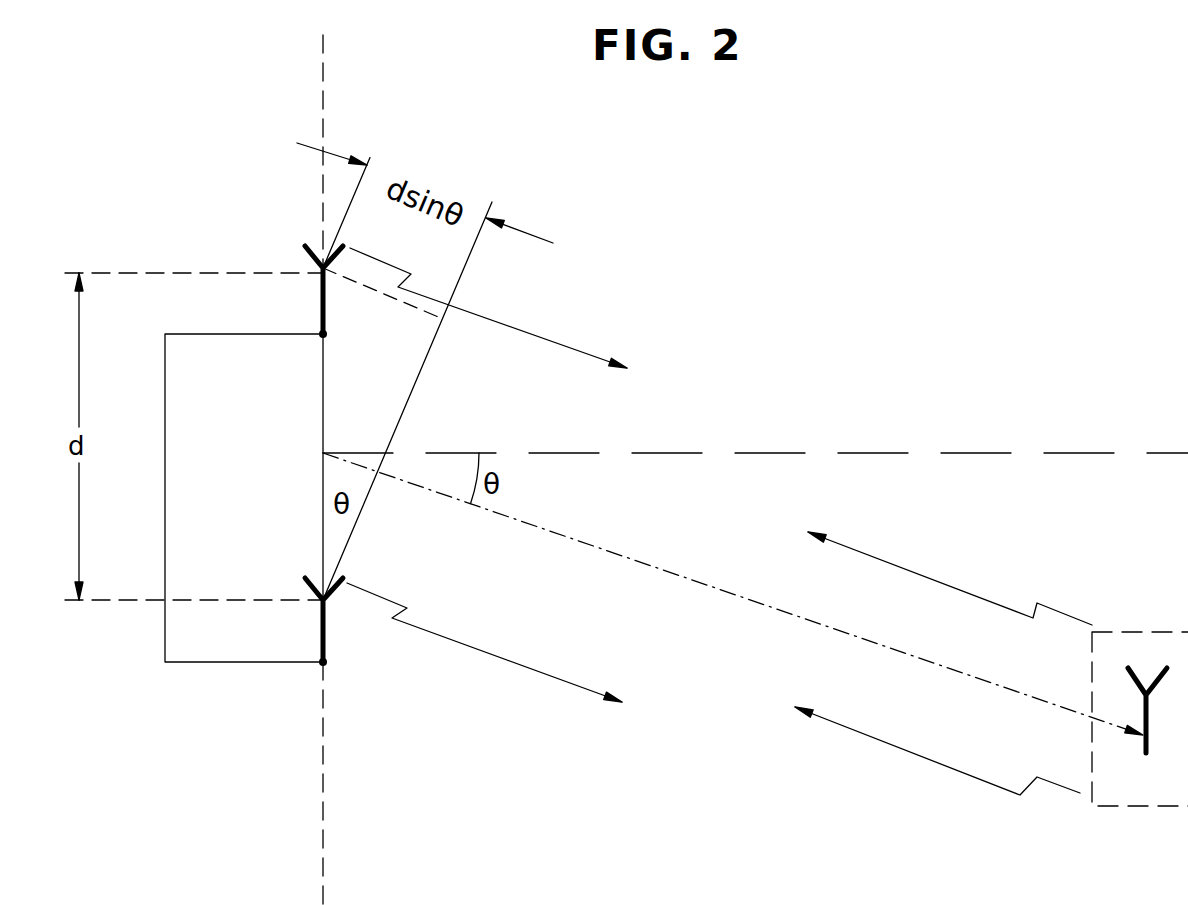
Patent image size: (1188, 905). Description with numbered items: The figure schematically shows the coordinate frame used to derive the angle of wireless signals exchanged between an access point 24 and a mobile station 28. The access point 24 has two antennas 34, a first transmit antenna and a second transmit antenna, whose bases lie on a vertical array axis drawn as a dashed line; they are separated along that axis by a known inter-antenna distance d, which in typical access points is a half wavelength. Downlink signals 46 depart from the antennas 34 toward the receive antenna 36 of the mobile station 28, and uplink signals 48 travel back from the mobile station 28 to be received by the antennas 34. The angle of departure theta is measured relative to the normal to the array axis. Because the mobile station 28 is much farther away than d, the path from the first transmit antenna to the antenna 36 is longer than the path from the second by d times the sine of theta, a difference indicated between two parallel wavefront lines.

The access point 24 is at (165, 397).
The antennas 34 is at (306, 248).
The downlink signals 46 is at (557, 343).
The uplink signals 48 is at (943, 585).
The mobile station 28 is at (1180, 632).
The antenna 36 is at (1128, 671).